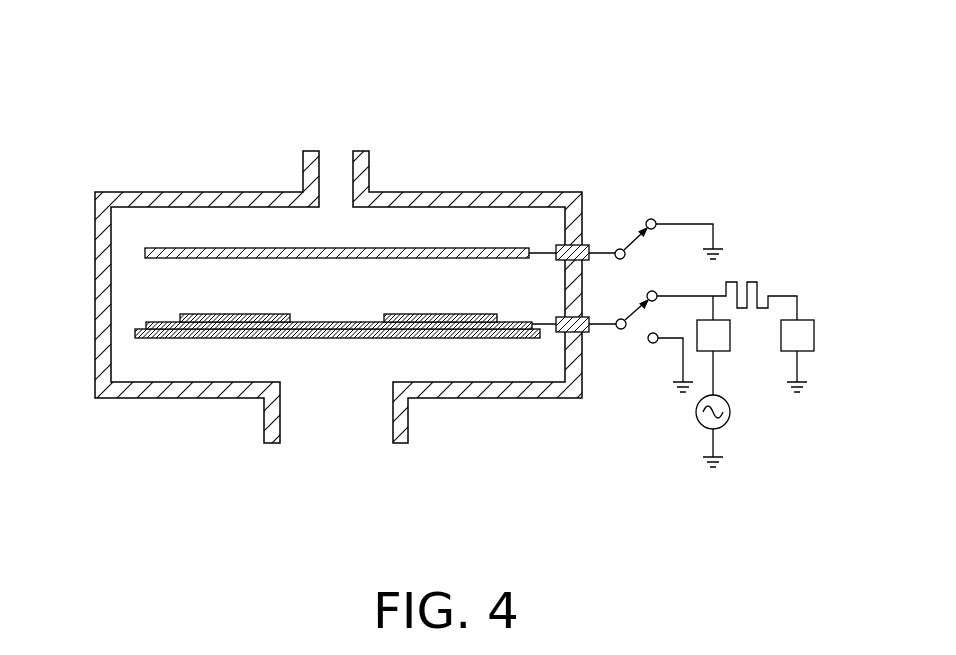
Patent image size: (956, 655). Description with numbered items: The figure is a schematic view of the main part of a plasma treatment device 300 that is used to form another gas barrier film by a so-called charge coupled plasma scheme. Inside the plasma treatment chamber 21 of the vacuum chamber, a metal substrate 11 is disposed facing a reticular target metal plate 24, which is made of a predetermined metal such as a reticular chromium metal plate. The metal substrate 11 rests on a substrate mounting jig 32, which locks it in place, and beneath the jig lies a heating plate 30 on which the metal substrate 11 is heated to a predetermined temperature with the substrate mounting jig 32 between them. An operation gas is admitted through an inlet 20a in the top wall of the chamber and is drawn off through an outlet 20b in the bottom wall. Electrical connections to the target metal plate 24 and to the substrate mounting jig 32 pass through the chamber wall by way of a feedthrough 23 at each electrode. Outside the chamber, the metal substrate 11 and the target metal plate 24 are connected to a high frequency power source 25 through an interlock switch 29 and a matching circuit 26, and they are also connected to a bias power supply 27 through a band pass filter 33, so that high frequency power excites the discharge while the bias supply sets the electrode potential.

The plasma treatment device 300 is at (118, 74).
The inlet 20a is at (333, 150).
The outlet 20b is at (338, 447).
The plasma treatment chamber 21 is at (477, 364).
The reticular target metal plate 24 is at (172, 248).
The heating plate 30 is at (175, 339).
The substrate mounting jig 32 is at (157, 322).
The metal substrate 11 is at (214, 314).
The feedthrough 23 is at (580, 245).
The interlock switch 29 is at (678, 192).
The band pass filter 33 is at (757, 282).
The matching circuit 26 is at (730, 335).
The bias power supply 27 is at (813, 335).
The high frequency power source 25 is at (730, 412).